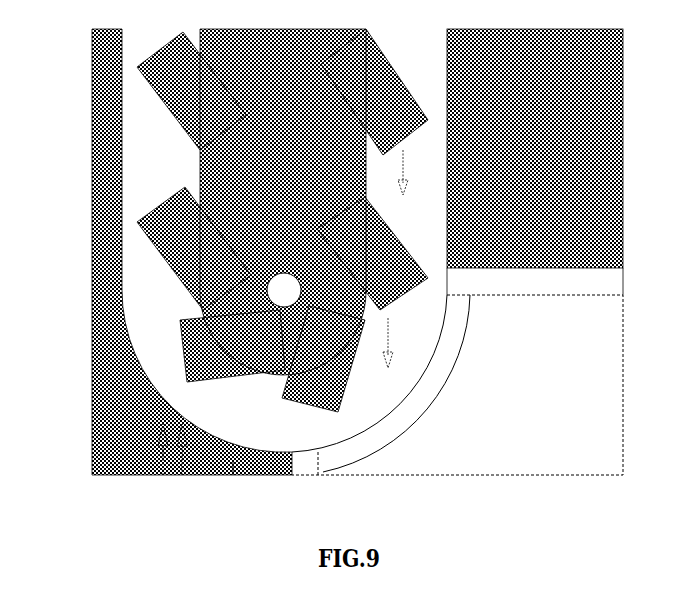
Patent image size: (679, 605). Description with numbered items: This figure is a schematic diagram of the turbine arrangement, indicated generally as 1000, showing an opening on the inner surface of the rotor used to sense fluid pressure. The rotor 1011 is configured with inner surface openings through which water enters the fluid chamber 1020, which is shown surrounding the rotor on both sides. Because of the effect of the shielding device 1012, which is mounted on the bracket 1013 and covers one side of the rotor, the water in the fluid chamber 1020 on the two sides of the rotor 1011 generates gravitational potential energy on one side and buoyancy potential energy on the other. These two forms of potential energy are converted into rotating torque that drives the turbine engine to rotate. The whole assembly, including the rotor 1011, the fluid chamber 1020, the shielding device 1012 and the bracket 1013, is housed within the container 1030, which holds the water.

The rotor body / shaft 1000 is at (285, 274).
The rotor 1011 is at (150, 142).
The shielding device 1012 is at (413, 418).
The bracket 1013 is at (526, 296).
The fluid chamber 1020 is at (282, 220).
The container 1030 is at (90, 272).